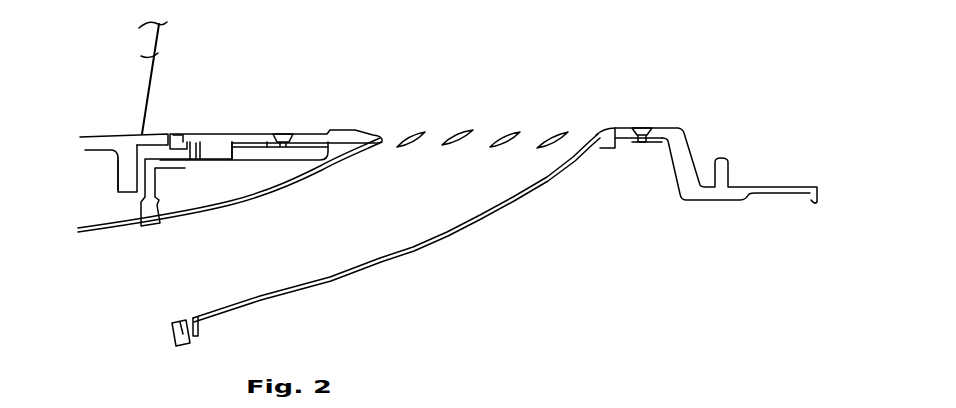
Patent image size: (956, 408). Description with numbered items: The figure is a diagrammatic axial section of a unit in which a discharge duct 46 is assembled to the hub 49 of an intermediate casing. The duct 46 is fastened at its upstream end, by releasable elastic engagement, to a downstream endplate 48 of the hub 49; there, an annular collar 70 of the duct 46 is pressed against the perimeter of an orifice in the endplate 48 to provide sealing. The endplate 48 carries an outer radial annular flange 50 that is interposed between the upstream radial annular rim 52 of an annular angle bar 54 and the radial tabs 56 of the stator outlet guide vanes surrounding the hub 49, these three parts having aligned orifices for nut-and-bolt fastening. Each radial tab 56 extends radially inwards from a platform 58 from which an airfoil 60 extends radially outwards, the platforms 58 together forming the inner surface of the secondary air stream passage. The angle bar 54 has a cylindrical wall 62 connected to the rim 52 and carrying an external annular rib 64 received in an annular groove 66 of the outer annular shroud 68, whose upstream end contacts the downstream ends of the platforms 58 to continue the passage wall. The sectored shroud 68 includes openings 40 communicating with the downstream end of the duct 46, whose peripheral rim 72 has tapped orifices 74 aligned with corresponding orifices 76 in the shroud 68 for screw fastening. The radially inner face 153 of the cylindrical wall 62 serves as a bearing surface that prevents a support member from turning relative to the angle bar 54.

The openings 40 is at (438, 132).
The discharge duct 46 is at (325, 281).
The downstream endplate 48 is at (162, 334).
The intermediate casing hub 49 is at (95, 236).
The outer radial annular flange 50 is at (136, 167).
The upstream radial annular rim 52 is at (152, 178).
The annular angle bar 54 is at (225, 176).
The radial tabs 56 is at (119, 177).
The platform 58 is at (111, 135).
The airfoil 60 is at (162, 50).
The cylindrical wall 62 is at (207, 157).
The external annular rib 64 is at (187, 138).
The annular groove 66 is at (195, 153).
The outer annular shroud 68 is at (259, 124).
The annular collar 70 is at (208, 328).
The peripheral rim 72 is at (627, 160).
The tapped orifices 74 is at (652, 147).
The orifices 76 is at (648, 128).
The radially inner face 153 is at (196, 167).